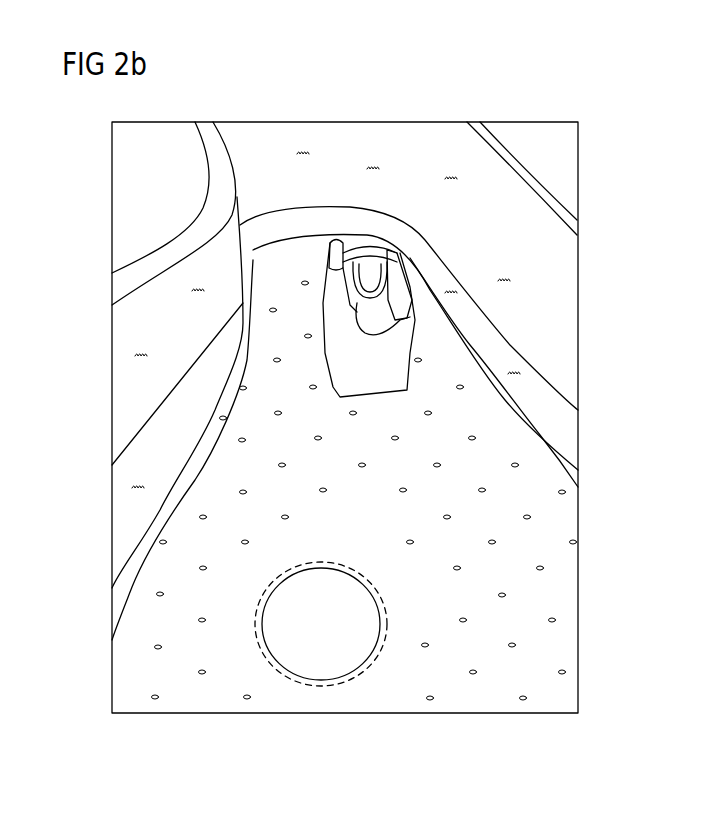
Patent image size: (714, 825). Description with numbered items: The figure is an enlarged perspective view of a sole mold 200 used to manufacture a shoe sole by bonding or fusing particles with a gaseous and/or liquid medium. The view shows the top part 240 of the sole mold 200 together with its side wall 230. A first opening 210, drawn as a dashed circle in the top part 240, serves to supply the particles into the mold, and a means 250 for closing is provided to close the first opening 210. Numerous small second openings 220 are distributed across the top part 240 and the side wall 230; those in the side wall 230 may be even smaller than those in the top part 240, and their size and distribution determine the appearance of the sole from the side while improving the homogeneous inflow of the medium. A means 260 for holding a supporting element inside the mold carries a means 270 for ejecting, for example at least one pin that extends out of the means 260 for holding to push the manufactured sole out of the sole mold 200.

The sole mold 200 is at (163, 207).
The first opening 210 is at (385, 618).
The second openings 220 is at (452, 293).
The side wall 230 is at (432, 150).
The top part 240 is at (453, 673).
The means for closing 250 is at (322, 663).
The means for holding a supporting element 260 is at (368, 280).
The means for ejecting 270 is at (410, 287).